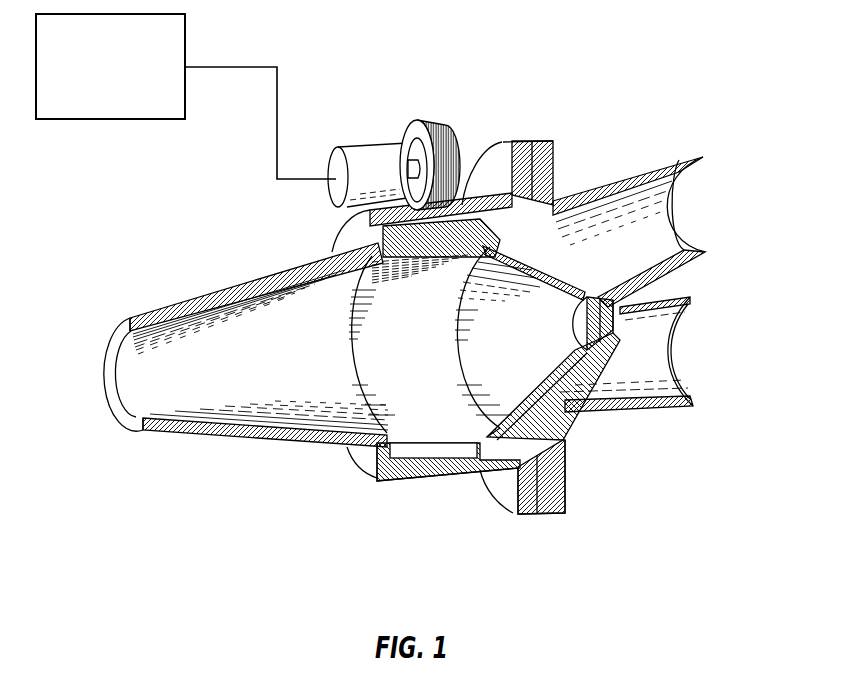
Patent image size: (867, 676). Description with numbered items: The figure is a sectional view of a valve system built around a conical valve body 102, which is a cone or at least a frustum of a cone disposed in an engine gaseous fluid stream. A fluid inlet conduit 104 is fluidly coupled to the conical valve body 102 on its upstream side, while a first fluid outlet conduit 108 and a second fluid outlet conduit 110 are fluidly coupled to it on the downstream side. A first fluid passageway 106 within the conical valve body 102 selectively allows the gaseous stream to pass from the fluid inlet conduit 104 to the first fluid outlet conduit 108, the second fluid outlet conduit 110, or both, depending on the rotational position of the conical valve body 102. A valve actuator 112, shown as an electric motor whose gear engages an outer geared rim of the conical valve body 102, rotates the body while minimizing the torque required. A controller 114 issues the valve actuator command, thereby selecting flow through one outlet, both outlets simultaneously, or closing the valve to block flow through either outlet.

The conical valve body 102 is at (414, 459).
The fluid inlet conduit 104 is at (132, 383).
The first fluid passageway 106 is at (535, 275).
The first fluid outlet conduit 108 is at (683, 228).
The second fluid outlet conduit 110 is at (667, 358).
The valve actuator 112 is at (370, 157).
The controller 114 is at (132, 80).